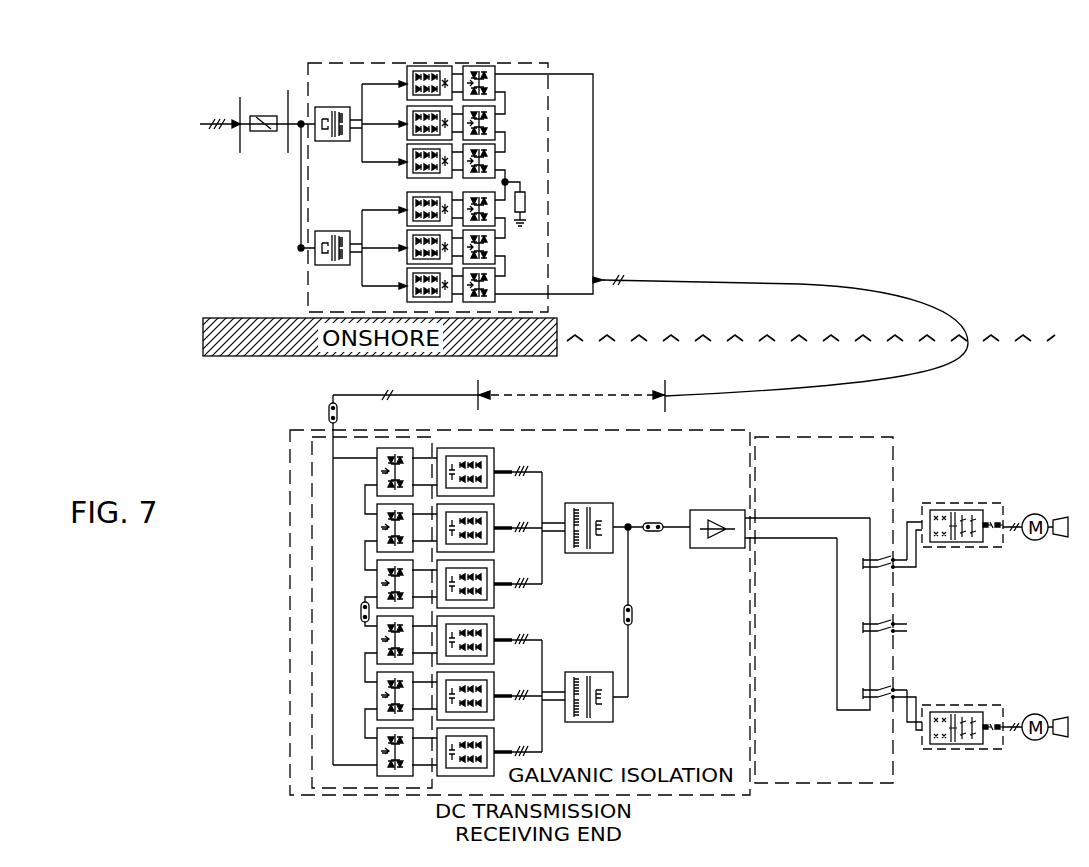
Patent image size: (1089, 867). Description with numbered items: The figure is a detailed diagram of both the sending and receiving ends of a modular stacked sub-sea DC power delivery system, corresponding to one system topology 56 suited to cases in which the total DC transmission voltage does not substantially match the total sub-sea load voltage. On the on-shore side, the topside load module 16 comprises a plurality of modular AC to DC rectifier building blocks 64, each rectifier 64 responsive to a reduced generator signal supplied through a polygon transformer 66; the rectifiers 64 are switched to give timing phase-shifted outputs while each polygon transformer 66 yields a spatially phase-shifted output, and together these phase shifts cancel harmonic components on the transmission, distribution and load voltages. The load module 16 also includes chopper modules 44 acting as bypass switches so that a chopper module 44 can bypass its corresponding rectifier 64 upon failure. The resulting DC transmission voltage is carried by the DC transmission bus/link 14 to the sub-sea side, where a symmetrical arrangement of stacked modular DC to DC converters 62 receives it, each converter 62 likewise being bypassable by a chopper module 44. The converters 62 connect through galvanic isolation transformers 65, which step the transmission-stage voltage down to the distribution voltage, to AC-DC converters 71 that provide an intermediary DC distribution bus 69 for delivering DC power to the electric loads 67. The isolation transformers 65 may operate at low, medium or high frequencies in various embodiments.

The DC transmission bus/link 14 is at (703, 283).
The on-shore or topside load module 16 is at (548, 98).
The chopper module 44 is at (497, 80).
The system topology 56 is at (836, 192).
The modular DC to DC converter 62 is at (494, 622).
The modular AC to DC rectifier building block 64 is at (406, 110).
The galvanic isolation transformer 65 is at (600, 672).
The polygon transformer 66 is at (326, 107).
The electric load 67 is at (1033, 540).
The DC distribution bus 69 is at (893, 468).
The AC-DC converter 71 is at (717, 548).